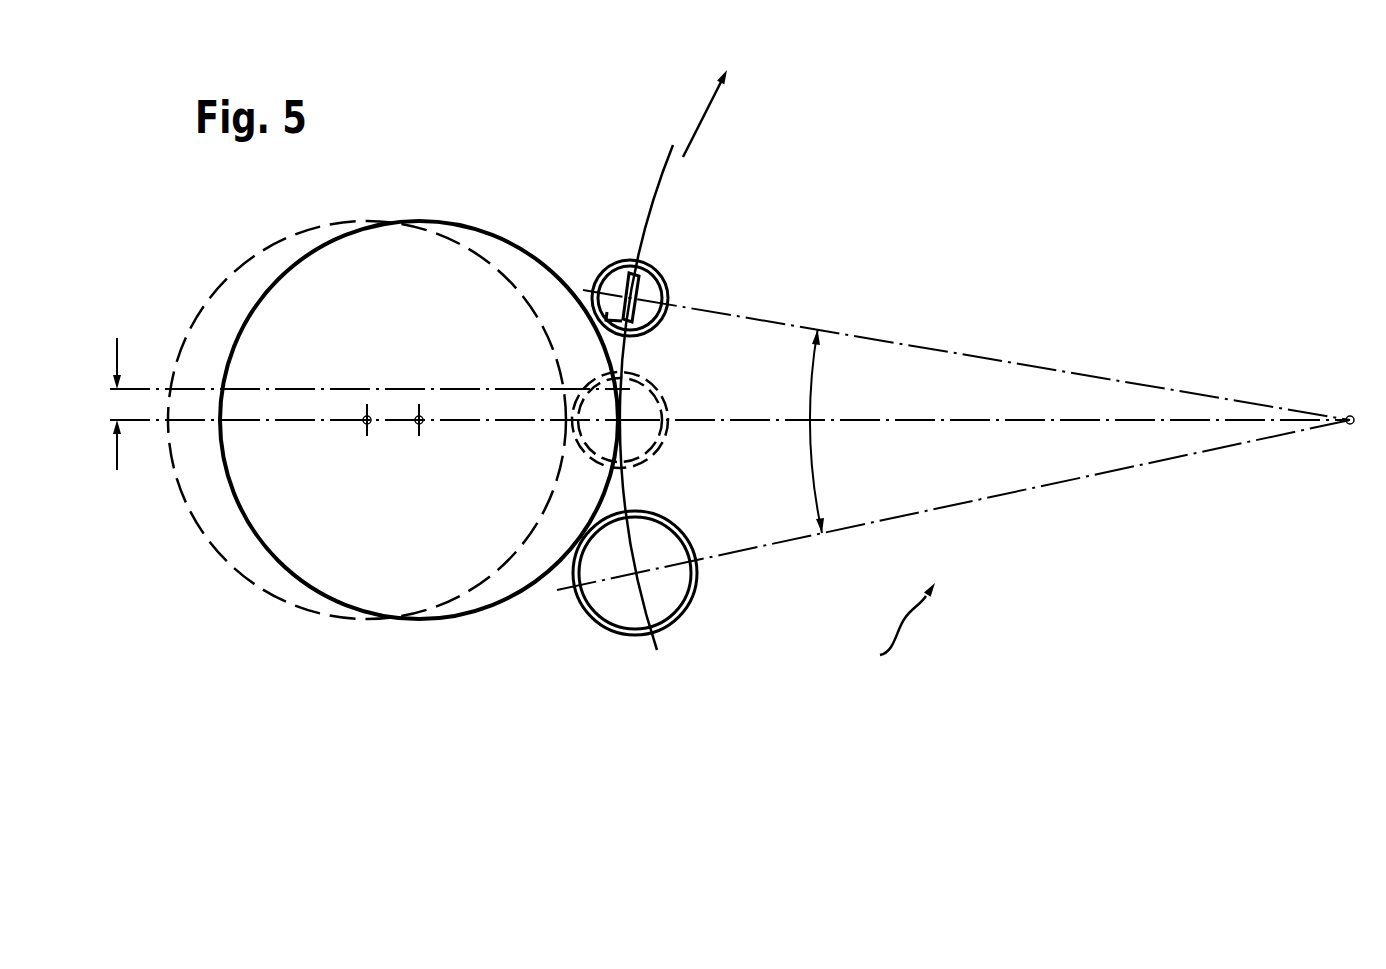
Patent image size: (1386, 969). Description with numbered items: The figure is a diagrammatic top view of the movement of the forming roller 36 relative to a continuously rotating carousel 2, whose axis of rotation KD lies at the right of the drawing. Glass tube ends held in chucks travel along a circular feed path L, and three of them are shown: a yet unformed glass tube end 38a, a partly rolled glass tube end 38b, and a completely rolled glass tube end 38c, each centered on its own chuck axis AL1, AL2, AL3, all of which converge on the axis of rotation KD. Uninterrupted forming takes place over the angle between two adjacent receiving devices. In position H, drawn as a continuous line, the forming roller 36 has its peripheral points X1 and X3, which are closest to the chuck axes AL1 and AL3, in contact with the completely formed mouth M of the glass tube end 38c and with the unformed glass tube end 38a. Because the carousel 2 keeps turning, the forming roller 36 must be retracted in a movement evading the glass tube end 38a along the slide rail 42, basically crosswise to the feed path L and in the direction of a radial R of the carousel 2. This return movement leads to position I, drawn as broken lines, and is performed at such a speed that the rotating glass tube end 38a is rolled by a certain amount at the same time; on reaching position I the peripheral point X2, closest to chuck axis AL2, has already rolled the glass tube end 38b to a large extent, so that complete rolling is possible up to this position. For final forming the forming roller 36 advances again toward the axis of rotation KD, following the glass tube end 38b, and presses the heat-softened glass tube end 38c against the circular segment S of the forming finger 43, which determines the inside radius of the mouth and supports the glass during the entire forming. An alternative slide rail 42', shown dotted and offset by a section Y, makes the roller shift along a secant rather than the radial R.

The carousel 2 is at (896, 629).
The forming roller 36 is at (393, 450).
The unformed glass tube end 38a is at (698, 583).
The partly rolled glass tube end 38b is at (662, 452).
The completely rolled glass tube end 38c is at (634, 253).
The slide rail 42 is at (365, 454).
The offset slide rail 42' is at (370, 358).
The forming finger 43 is at (628, 270).
The forward position of forming roller H is at (490, 618).
The retracted position of forming roller I is at (295, 614).
The circular feed path L is at (663, 170).
The mouth M is at (647, 278).
The circular segment S is at (601, 283).
The radial R is at (973, 418).
The offset section Y is at (116, 404).
The axis of rotation of carousel KD is at (1339, 448).
The first chuck axis AL1 is at (635, 573).
The second chuck axis AL2 is at (626, 414).
The third chuck axis AL3 is at (670, 287).
The first peripheral point X1 is at (581, 536).
The second peripheral point X2 is at (568, 424).
The third peripheral point X3 is at (592, 319).